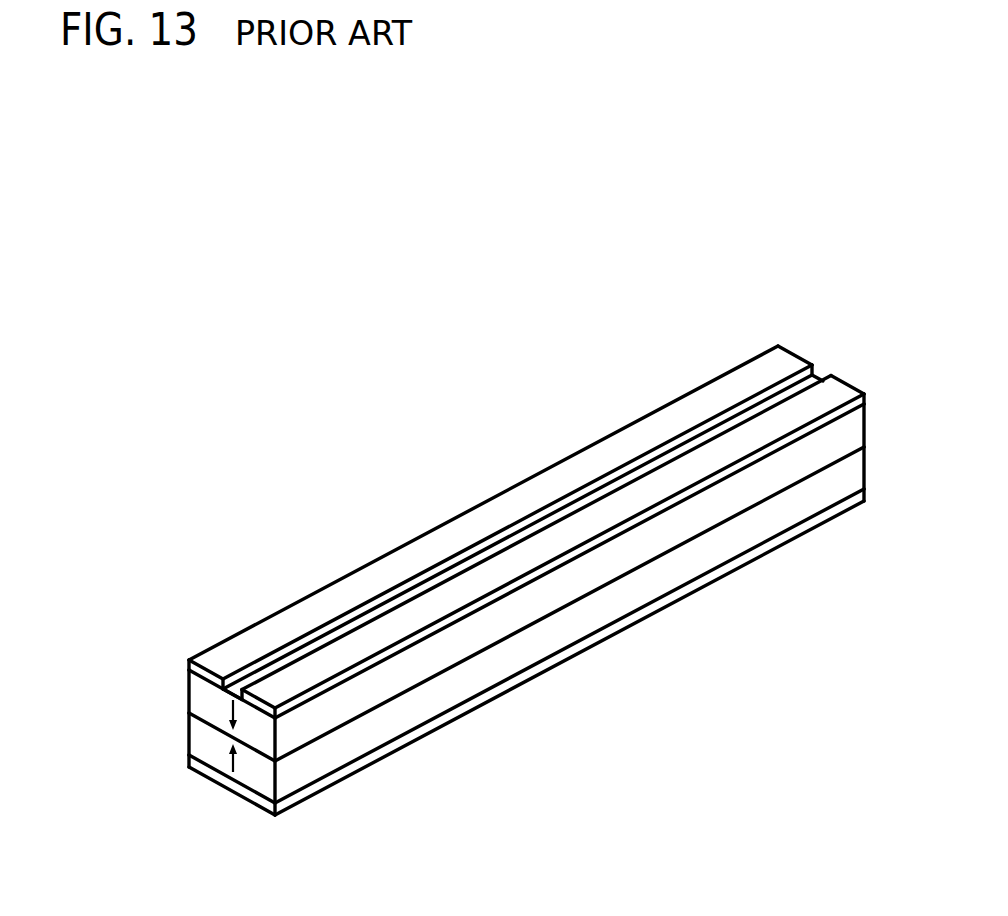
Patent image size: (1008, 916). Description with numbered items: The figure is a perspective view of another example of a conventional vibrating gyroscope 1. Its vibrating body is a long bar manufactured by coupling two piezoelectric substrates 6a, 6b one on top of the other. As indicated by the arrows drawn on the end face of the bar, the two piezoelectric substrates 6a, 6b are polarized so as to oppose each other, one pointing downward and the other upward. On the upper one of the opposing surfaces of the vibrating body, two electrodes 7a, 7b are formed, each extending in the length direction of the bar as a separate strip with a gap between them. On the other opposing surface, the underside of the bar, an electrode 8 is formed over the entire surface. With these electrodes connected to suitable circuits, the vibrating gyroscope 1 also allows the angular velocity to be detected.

The vibrating gyroscope 1 is at (280, 135).
The piezoelectric substrate 6a is at (748, 493).
The piezoelectric substrate 6b is at (698, 558).
The electrode 7a is at (575, 475).
The electrode 7b is at (520, 560).
The electrode 8 is at (603, 638).